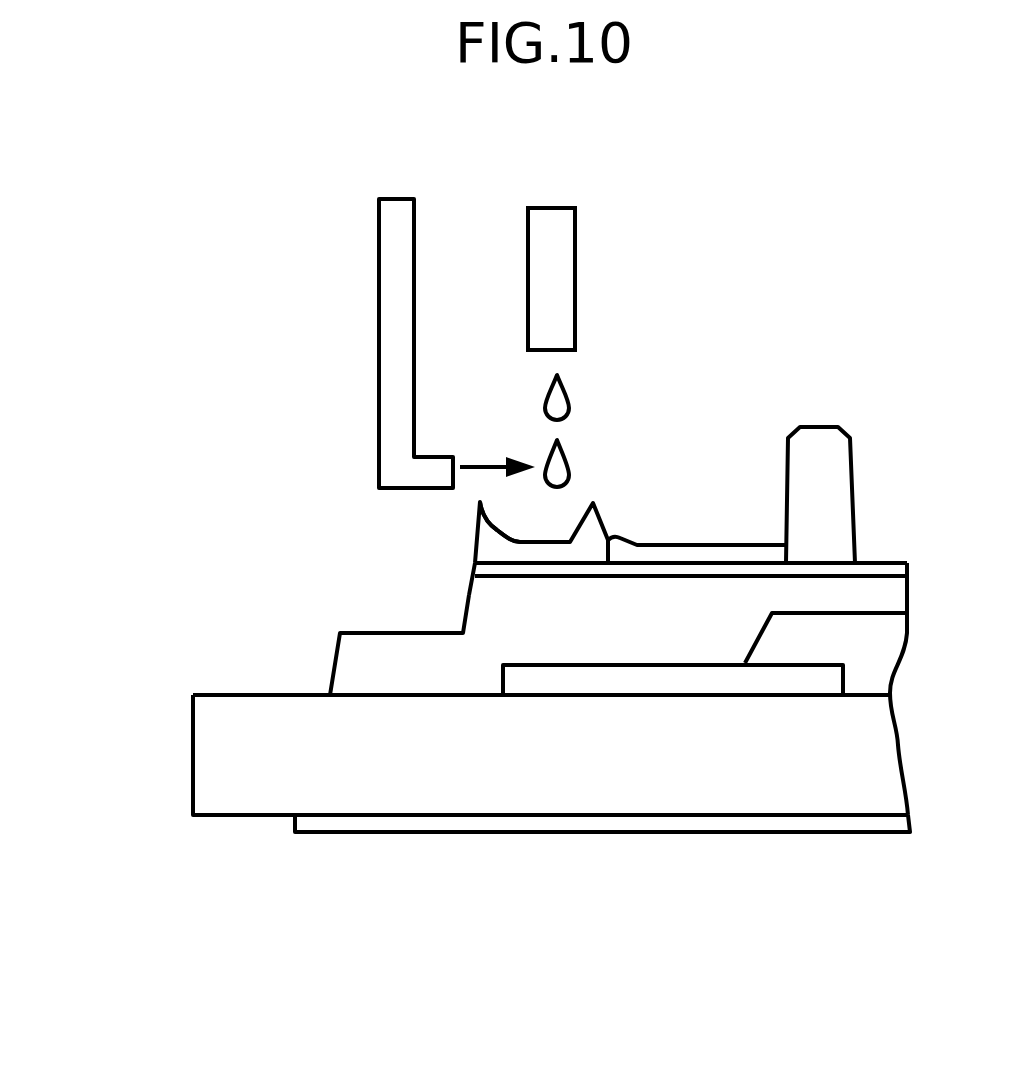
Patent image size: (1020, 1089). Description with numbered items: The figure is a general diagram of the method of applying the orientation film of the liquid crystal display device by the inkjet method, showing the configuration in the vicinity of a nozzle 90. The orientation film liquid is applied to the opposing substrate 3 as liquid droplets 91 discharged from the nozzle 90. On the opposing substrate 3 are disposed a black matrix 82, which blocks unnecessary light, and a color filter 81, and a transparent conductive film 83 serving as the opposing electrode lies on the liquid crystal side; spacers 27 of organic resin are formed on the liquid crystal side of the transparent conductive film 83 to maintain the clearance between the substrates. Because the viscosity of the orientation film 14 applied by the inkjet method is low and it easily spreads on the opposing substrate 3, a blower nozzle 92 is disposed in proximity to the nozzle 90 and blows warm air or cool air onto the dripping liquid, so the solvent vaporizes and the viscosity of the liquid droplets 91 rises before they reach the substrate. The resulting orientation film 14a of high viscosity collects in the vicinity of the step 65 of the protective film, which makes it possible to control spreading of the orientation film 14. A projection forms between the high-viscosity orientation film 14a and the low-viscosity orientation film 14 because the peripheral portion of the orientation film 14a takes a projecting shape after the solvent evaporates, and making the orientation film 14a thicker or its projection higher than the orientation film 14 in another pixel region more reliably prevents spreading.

The opposing substrate 3 is at (217, 738).
The orientation film 14 is at (738, 547).
The high-viscosity orientation film 14a is at (493, 555).
The spacer 27 is at (822, 452).
The step 65 is at (465, 613).
The color filter 81 is at (852, 648).
The black matrix 82 is at (665, 677).
The transparent conductive film 83 is at (573, 568).
The nozzle 90 is at (545, 272).
The liquid droplet 91 is at (559, 465).
The blower nozzle 92 is at (393, 365).